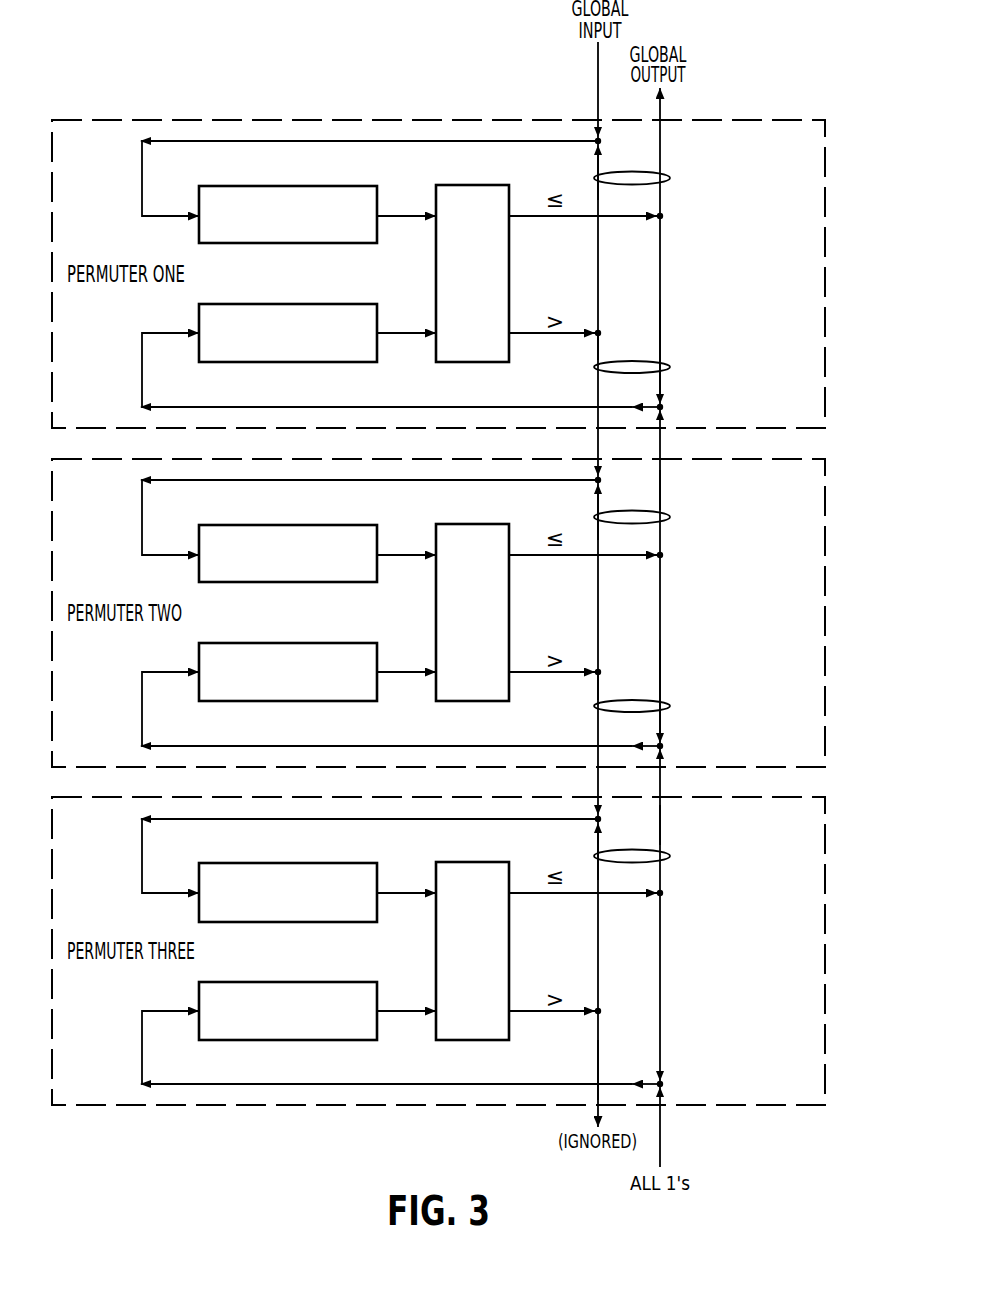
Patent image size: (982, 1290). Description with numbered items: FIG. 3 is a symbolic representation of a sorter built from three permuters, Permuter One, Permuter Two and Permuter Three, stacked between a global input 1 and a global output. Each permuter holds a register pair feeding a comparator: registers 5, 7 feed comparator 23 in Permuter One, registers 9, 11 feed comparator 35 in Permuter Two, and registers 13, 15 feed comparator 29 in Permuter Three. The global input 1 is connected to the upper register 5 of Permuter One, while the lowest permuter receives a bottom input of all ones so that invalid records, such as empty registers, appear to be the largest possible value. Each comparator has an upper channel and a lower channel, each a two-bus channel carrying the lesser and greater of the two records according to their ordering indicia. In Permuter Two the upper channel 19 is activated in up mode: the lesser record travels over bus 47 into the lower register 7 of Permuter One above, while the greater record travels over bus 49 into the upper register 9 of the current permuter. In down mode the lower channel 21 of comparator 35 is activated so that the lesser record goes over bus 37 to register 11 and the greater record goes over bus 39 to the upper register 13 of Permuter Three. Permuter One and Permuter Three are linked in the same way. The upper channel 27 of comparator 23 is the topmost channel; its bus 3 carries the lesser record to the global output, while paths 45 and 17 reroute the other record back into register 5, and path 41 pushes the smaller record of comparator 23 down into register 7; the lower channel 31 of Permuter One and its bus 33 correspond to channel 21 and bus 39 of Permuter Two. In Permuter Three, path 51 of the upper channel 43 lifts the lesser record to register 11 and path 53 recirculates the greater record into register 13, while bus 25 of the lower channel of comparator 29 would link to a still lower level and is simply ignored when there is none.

The global input 1 is at (602, 125).
The bus of upper channel 3 is at (672, 151).
The upper register of Permuter One 5 is at (378, 198).
The lower register of Permuter One 7 is at (378, 316).
The upper register of Permuter Two 9 is at (378, 537).
The lower register of Permuter Two 11 is at (378, 655).
The upper register of Permuter Three 13 is at (378, 877).
The lower register of Permuter Three 15 is at (378, 996).
The path 17 is at (297, 142).
The upper channel of Permuter Two 19 is at (670, 516).
The lower channel of Permuter Two 21 is at (670, 706).
The comparator of Permuter One 23 is at (458, 186).
The bus of lower channel of comparator 29 25 is at (598, 1062).
The upper channel of Permuter One 27 is at (670, 177).
The comparator of Permuter Three 29 is at (456, 863).
The crossover coupling 31 is at (670, 366).
The input line segment 33 is at (600, 343).
The comparator of Permuter Two 35 is at (458, 525).
The bus 37 is at (662, 680).
The bus 39 is at (598, 690).
The path 41 is at (662, 344).
The upper channel of Permuter Three 43 is at (670, 856).
The path 45 is at (598, 161).
The bus 47 is at (662, 494).
The bus 49 is at (598, 500).
The path 51 is at (662, 830).
The path 53 is at (598, 839).